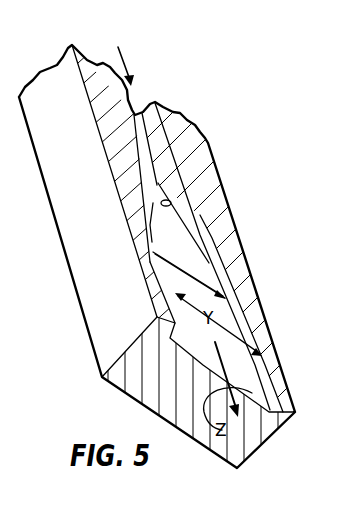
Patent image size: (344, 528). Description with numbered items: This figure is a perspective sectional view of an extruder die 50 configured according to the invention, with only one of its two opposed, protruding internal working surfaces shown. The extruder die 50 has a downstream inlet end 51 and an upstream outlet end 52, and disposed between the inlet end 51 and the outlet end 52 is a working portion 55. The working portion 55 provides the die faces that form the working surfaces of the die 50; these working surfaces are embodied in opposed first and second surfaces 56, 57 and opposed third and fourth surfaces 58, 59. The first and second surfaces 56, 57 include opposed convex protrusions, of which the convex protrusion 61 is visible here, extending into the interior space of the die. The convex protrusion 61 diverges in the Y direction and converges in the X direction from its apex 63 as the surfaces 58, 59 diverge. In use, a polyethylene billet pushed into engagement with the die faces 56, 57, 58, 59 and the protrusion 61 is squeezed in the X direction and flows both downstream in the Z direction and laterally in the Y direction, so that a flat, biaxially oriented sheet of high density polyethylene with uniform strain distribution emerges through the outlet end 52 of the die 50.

The extruder die 50 is at (243, 218).
The inlet end 51 is at (152, 177).
The outlet end 52 is at (232, 327).
The working portion 55 is at (198, 232).
The first surface 56 is at (153, 207).
The second surface 57 is at (125, 183).
The third surface 58 is at (153, 193).
The fourth surface 59 is at (172, 200).
The convex protrusion 61 is at (180, 251).
The apex 63 is at (180, 200).